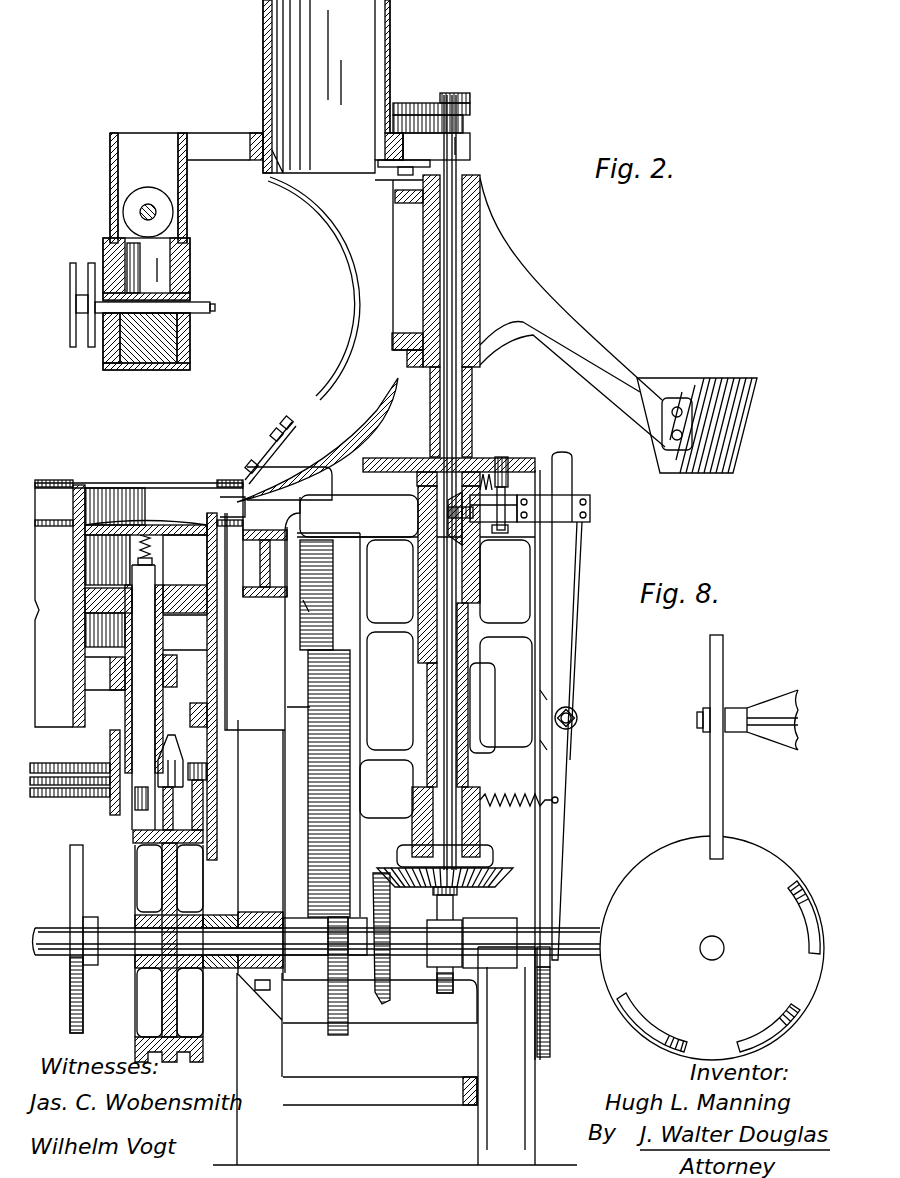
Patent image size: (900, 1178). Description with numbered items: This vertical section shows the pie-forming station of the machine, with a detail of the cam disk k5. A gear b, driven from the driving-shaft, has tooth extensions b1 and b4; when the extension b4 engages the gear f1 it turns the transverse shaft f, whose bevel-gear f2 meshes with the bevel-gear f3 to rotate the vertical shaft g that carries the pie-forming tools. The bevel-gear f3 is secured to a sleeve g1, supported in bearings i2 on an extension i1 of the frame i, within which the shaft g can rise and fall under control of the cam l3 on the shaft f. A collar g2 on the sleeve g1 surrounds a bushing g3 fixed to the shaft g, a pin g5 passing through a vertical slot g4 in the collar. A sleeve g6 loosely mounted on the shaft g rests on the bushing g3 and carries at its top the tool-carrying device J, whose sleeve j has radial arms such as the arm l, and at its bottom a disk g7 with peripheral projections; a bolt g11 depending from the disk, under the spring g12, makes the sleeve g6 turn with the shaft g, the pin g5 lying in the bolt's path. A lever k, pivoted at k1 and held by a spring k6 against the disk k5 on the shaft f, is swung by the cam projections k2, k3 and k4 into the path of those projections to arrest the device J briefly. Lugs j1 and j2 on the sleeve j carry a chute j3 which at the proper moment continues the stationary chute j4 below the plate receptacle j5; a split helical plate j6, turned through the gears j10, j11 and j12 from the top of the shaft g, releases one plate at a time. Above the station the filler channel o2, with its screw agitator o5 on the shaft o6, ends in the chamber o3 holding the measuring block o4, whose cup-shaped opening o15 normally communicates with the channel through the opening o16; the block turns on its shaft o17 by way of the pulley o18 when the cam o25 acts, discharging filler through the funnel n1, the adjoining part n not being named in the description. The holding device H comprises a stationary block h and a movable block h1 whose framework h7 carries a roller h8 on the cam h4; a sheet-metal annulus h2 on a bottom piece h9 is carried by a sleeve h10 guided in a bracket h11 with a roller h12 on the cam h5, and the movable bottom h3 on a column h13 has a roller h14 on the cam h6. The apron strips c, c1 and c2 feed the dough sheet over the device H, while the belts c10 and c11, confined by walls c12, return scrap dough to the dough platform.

In FIG. 2, the cylindrical receptacle j5 is at (283, 42).
In FIG. 2, the gear j10 is at (408, 103).
In FIG. 2, the idler-gear j11 is at (445, 103).
In FIG. 2, the gear j12 is at (457, 115).
In FIG. 2, the circular plate j6 is at (385, 162).
In FIG. 2, the channel o2 is at (186, 188).
In FIG. 2, the screw conveyer or agitator o5 is at (165, 212).
In FIG. 2, the shaft o6 is at (140, 212).
In FIG. 2, the opening o16 is at (110, 250).
In FIG. 2, the cup-shaped opening o15 is at (160, 262).
In FIG. 2, the pulley o18 is at (80, 276).
In FIG. 2, the cylindrical chamber o3 is at (135, 365).
In FIG. 2, the shaft o17 is at (165, 312).
In FIG. 2, the measuring and feeding block o4 is at (103, 362).
In FIG. 2, the chute j3 is at (362, 287).
In FIG. 2, the stationary chute j4 is at (325, 422).
In FIG. 2, the lug j1 is at (400, 205).
In FIG. 2, the lug j2 is at (410, 368).
In FIG. 2, the vertical shaft g is at (457, 210).
In FIG. 2, the sleeve j is at (480, 245).
In FIG. 2, the device J is at (544, 261).
In FIG. 2, the arm n is at (578, 350).
In FIG. 2, the funnel n1 is at (722, 388).
In FIG. 2, the sleeve g6 is at (472, 390).
In FIG. 2, the disk g7 is at (388, 458).
In FIG. 2, the bushing g3 is at (418, 500).
In FIG. 2, the spring g12 is at (505, 462).
In FIG. 2, the pin g5 is at (490, 553).
In FIG. 2, the vertical slot g4 is at (485, 560).
In FIG. 2, the projecting bolt g11 is at (550, 500).
In FIG. 2, the lever k is at (563, 470).
In FIG. 8, the lever k is at (715, 668).
In FIG. 2, the pivot k1 is at (578, 720).
In FIG. 8, the pivot k1 is at (702, 725).
In FIG. 2, the spring k6 is at (519, 780).
In FIG. 2, the radial arm l is at (540, 765).
In FIG. 2, the frame i is at (267, 598).
In FIG. 2, the extension i1 is at (517, 648).
In FIG. 2, the bearings i2 is at (418, 662).
In FIG. 2, the collar g2 is at (420, 578).
In FIG. 2, the sleeve g1 is at (472, 735).
In FIG. 2, the extension b4 is at (333, 652).
In FIG. 2, the gear b is at (318, 778).
In FIG. 2, the extension b1 is at (306, 612).
In FIG. 2, the gear f1 is at (338, 1036).
In FIG. 2, the bevel-gear f2 is at (385, 1005).
In FIG. 2, the bevel-gear f3 is at (516, 872).
In FIG. 2, the cam l3 is at (440, 980).
In FIG. 2, the shaft f is at (122, 942).
In FIG. 8, the shaft f is at (712, 945).
In FIG. 2, the cam o25 is at (72, 892).
In FIG. 2, the disk k5 is at (551, 985).
In FIG. 8, the disk k5 is at (668, 842).
In FIG. 2, the strip c is at (118, 483).
In FIG. 2, the strip c2 is at (55, 486).
In FIG. 2, the strip c1 is at (226, 482).
In FIG. 2, the stationary block h is at (95, 490).
In FIG. 2, the sheet-metal annulus h2 is at (158, 512).
In FIG. 2, the vertically-movable bottom h3 is at (172, 528).
In FIG. 2, the device H is at (185, 549).
In FIG. 2, the bottom piece h9 is at (95, 596).
In FIG. 2, the column h13 is at (140, 628).
In FIG. 2, the vertically-movable block h1 is at (200, 632).
In FIG. 2, the framework h7 is at (205, 676).
In FIG. 2, the sleeve h10 is at (170, 692).
In FIG. 2, the bracket h11 is at (105, 700).
In FIG. 2, the endless belt or apron c10 is at (73, 775).
In FIG. 2, the endless belt or apron c11 is at (70, 790).
In FIG. 2, the walls c12 is at (110, 808).
In FIG. 2, the roller h14 is at (138, 810).
In FIG. 2, the roller h12 is at (180, 784).
In FIG. 2, the roller h8 is at (210, 786).
In FIG. 2, the cam h4 is at (203, 806).
In FIG. 2, the cam h5 is at (185, 830).
In FIG. 2, the cam h6 is at (150, 822).
In FIG. 8, the cam projection k2 is at (800, 912).
In FIG. 8, the cam projection k3 is at (782, 1020).
In FIG. 8, the cam projection k4 is at (633, 1016).